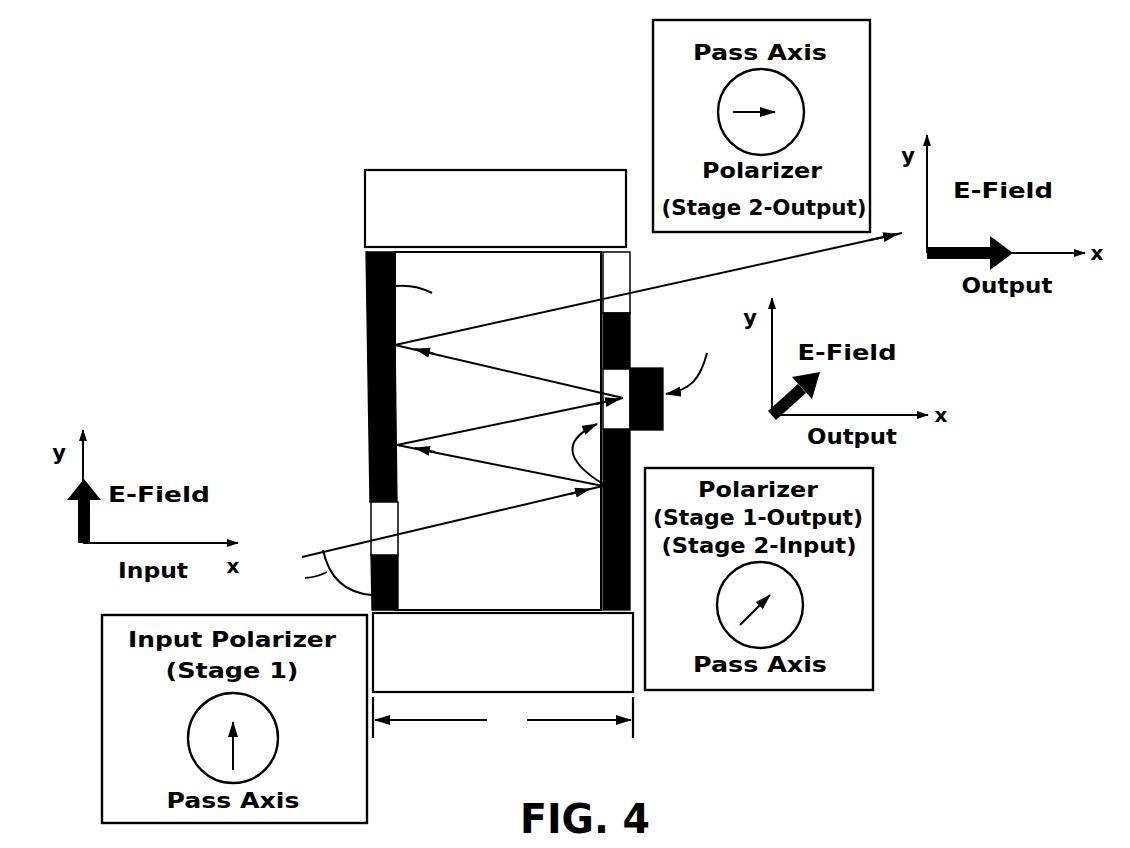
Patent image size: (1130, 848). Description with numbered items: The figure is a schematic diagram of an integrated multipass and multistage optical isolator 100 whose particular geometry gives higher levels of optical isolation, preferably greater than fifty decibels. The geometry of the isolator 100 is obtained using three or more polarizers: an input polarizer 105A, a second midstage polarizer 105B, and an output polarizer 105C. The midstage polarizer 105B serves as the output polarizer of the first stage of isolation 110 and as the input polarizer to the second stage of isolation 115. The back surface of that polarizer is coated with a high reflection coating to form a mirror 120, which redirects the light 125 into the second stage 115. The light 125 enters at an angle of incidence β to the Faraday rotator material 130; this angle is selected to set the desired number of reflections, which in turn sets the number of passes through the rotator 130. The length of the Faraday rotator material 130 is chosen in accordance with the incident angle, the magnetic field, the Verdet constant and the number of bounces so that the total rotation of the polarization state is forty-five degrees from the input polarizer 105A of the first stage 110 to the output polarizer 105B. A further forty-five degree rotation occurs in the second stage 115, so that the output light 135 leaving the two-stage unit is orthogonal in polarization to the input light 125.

The integrated multipass and multistage optical isolator 100 is at (260, 116).
The input polarizer 105A is at (368, 508).
The second midstage polarizer 105B is at (631, 465).
The output polarizer 105C is at (630, 264).
The first stage of isolation 110 is at (277, 607).
The second stage of isolation 115 is at (182, 258).
The mirror 120 is at (643, 366).
The light 125 is at (332, 542).
The Faraday rotator material 130 is at (367, 293).
The output light 135 is at (824, 259).